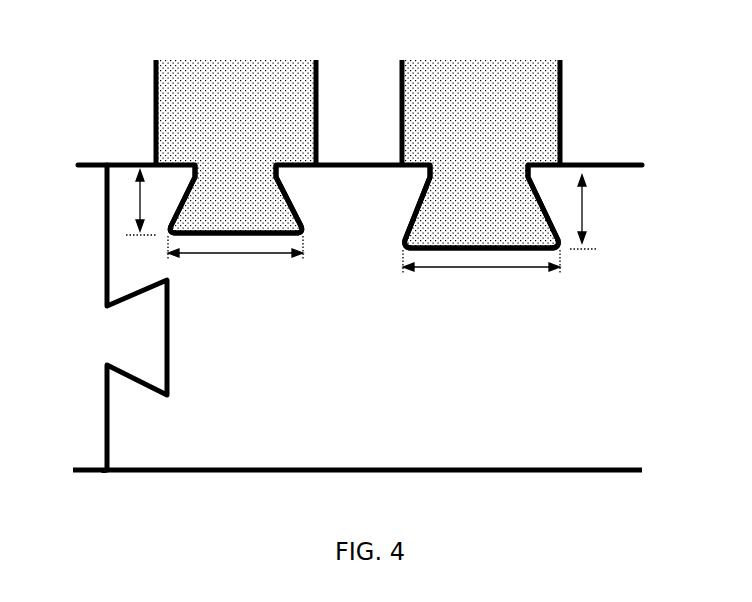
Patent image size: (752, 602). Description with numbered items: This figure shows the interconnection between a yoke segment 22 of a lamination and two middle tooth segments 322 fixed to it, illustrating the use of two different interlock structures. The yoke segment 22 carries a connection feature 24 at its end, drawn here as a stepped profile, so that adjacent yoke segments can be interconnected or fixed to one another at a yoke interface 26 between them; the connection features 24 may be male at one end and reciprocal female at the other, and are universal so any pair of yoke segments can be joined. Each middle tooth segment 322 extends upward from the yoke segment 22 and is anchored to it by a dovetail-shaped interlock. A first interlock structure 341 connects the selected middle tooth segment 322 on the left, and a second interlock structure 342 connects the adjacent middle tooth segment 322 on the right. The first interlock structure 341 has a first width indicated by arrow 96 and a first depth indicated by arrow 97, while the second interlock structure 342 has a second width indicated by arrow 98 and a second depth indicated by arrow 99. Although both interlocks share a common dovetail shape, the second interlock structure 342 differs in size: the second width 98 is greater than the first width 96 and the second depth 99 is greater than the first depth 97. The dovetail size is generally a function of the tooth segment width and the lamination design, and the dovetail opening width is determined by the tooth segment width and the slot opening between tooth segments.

The yoke segment 22 is at (60, 435).
The connection feature 24 is at (165, 397).
The yoke interface 26 is at (104, 472).
The middle tooth segment 322 is at (217, 105).
The first interlock structure 341 is at (215, 213).
The second interlock structure 342 is at (467, 218).
The first width 96 is at (235, 255).
The first depth 97 is at (130, 207).
The second width 98 is at (482, 269).
The second depth 99 is at (585, 208).